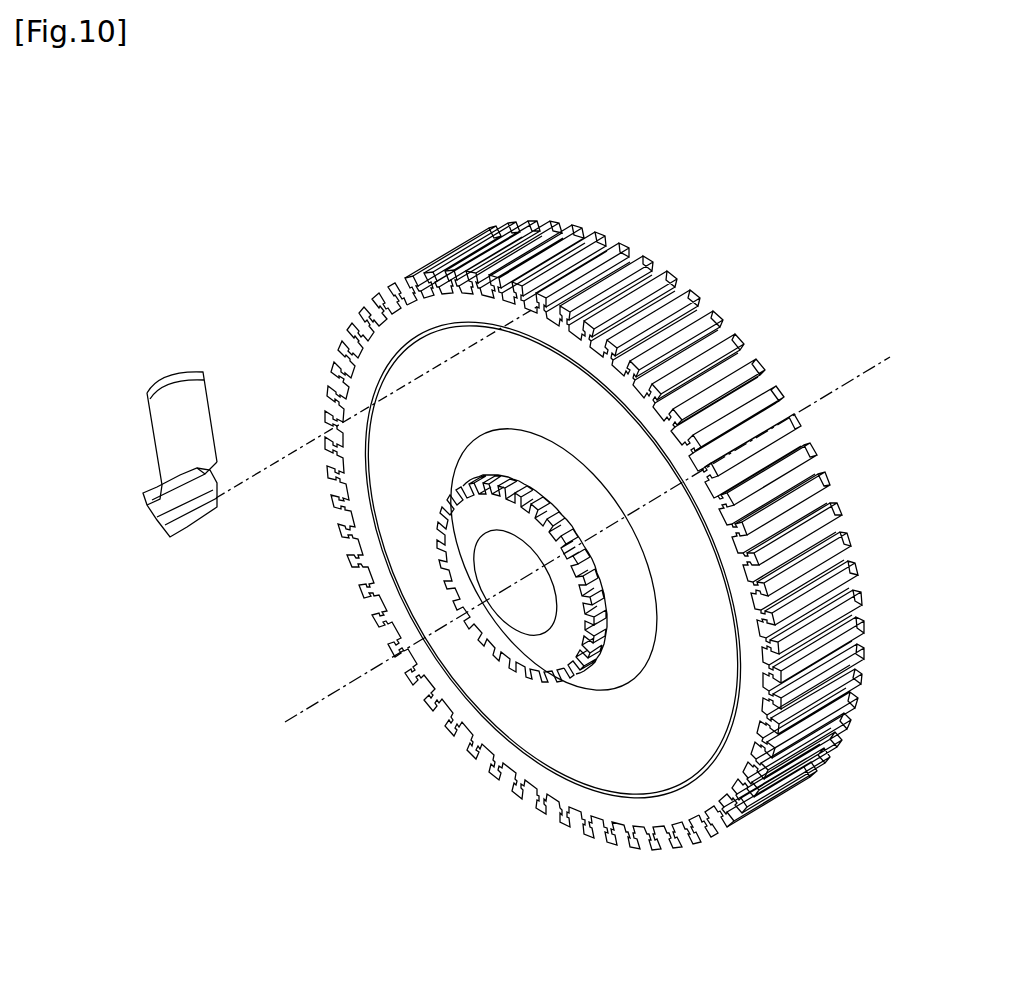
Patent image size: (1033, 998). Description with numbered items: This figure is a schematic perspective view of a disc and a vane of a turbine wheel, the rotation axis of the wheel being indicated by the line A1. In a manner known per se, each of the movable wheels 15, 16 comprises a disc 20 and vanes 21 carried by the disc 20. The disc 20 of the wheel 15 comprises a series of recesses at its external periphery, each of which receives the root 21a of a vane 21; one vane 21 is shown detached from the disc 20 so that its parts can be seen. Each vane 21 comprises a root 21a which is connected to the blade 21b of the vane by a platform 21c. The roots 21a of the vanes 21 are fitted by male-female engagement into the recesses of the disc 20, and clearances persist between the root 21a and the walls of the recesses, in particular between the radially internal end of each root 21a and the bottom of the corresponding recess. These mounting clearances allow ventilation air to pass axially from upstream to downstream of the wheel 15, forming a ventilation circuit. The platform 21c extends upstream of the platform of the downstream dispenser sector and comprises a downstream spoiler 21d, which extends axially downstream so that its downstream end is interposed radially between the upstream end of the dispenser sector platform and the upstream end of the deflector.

The movable wheel 15 is at (576, 534).
The movable wheel 16 is at (745, 176).
The disc 20 is at (592, 750).
The vane 21 is at (147, 440).
The root 21a is at (161, 537).
The blade 21b is at (197, 410).
The platform 21c is at (160, 497).
The downstream spoiler 21d is at (227, 463).
The rotation axis A1 is at (335, 700).